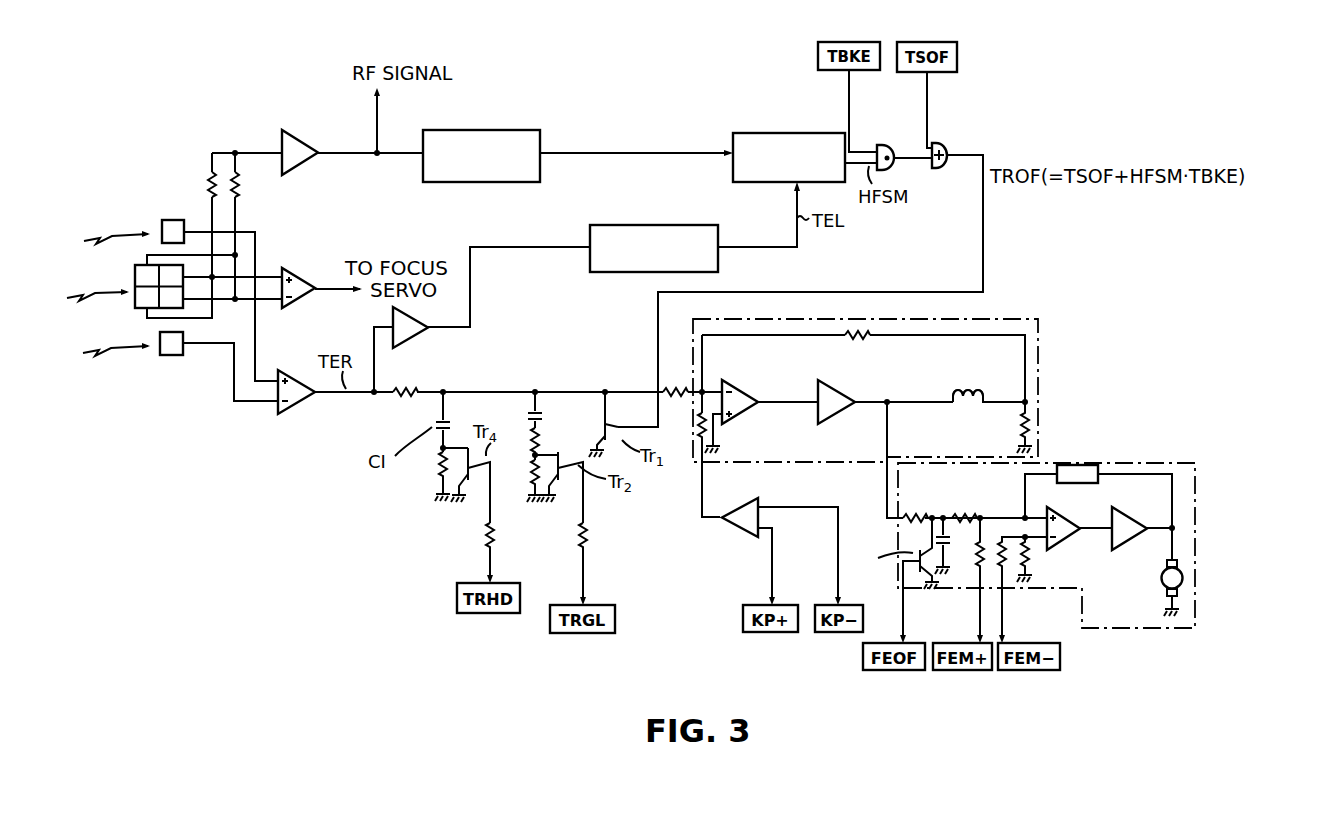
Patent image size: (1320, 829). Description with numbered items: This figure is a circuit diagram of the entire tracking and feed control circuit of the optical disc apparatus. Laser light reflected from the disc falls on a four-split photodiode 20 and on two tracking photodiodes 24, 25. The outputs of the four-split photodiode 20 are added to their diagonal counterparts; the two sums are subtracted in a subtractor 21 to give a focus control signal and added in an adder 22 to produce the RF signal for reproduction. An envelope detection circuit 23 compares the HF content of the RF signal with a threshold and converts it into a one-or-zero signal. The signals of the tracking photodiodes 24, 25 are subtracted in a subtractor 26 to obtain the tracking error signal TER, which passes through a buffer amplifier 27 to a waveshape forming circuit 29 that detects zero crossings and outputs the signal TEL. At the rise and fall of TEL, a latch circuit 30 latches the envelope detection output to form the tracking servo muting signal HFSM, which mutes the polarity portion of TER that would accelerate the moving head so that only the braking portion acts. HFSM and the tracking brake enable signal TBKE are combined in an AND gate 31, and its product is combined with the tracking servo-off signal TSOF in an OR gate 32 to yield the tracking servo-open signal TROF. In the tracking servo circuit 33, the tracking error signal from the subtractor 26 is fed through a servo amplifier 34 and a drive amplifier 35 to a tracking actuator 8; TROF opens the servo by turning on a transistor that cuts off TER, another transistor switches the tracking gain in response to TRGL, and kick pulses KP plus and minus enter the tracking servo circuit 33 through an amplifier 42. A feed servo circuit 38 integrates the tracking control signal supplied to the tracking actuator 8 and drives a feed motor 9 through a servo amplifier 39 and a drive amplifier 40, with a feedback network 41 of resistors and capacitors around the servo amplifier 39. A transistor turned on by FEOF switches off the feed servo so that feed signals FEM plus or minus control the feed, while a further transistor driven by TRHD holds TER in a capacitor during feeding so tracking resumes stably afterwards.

The tracking actuator 8 is at (975, 396).
The feed motor 9 is at (1155, 588).
The 4-split photodiode 20 is at (136, 300).
The subtractor 21 is at (301, 270).
The adder 22 is at (302, 130).
The envelope detection circuit 23 is at (472, 130).
The tracking photodiode 24 is at (174, 219).
The tracking photodiode 25 is at (170, 356).
The subtractor 26 is at (300, 415).
The buffer amplifier 27 is at (417, 339).
The waveshape forming circuit 29 is at (618, 272).
The latch circuit 30 is at (803, 133).
The AND gate 31 is at (884, 145).
The OR gate 32 is at (943, 143).
The tracking servo circuit 33 is at (897, 418).
The servo amplifier 34 is at (742, 396).
The drive amplifier 35 is at (841, 398).
The feed servo circuit 38 is at (1021, 540).
The servo amplifier 39 is at (1068, 541).
The drive amplifier 40 is at (1122, 541).
The feedback network 41 is at (1078, 483).
The amplifier 42 is at (753, 499).